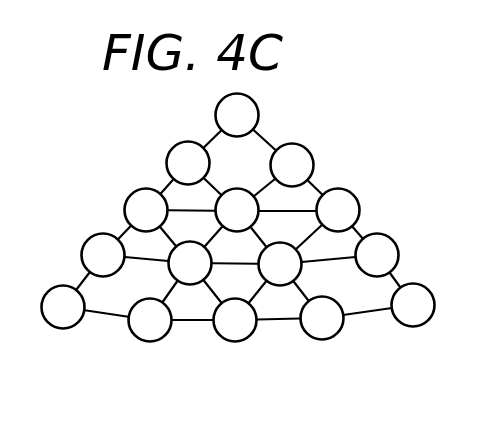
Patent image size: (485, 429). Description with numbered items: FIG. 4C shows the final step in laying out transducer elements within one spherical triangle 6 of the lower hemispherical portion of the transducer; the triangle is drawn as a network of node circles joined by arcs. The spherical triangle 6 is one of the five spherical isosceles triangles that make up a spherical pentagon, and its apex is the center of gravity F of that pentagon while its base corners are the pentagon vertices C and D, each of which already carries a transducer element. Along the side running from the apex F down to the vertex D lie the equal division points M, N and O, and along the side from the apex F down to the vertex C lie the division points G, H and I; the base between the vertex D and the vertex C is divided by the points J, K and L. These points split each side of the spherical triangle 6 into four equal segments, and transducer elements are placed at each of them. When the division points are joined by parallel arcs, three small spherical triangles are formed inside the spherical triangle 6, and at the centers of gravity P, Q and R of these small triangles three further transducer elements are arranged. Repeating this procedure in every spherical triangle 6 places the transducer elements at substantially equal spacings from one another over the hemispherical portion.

The spherical triangle 6 is at (238, 250).
The center of gravity of the spherical pentagon F is at (237, 115).
The equal division point O is at (188, 163).
The equal division point G is at (292, 165).
The equal division point N is at (146, 210).
The center of gravity of a small spherical triangle P is at (237, 210).
The equal division point H is at (338, 210).
The equal division point M is at (103, 255).
The center of gravity of a small spherical triangle Q is at (190, 263).
The center of gravity of a small spherical triangle R is at (280, 264).
The equal division point I is at (377, 255).
The vertex of the spherical pentagon D is at (63, 307).
The equal division point L is at (150, 320).
The equal division point K is at (235, 320).
The equal division point J is at (322, 318).
The vertex of the spherical pentagon C is at (413, 305).